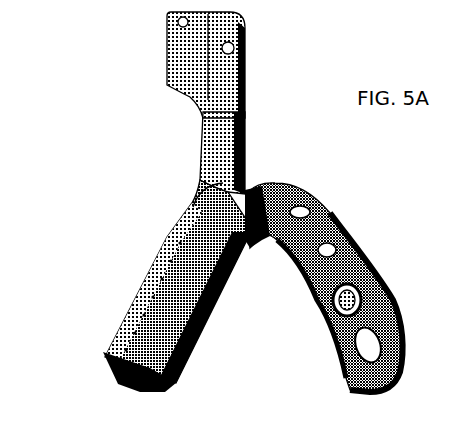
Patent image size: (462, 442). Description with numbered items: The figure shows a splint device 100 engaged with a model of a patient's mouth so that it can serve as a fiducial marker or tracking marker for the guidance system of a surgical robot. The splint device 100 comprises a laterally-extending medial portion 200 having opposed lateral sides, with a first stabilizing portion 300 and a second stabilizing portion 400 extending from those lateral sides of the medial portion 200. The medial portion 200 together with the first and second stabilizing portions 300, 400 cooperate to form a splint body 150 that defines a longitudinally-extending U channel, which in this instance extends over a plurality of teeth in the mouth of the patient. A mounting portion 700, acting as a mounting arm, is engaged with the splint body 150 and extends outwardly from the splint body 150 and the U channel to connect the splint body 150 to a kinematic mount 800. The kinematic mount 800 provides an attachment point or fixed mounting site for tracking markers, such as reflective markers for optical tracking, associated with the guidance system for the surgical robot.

The splint device 100 is at (228, 227).
The splint body 150 is at (182, 192).
The medial portion 200 is at (134, 384).
The first stabilizing portion 300 is at (141, 270).
The second stabilizing portion 400 is at (218, 297).
The mounting portion 700 is at (218, 150).
The kinematic mount 800 is at (232, 25).